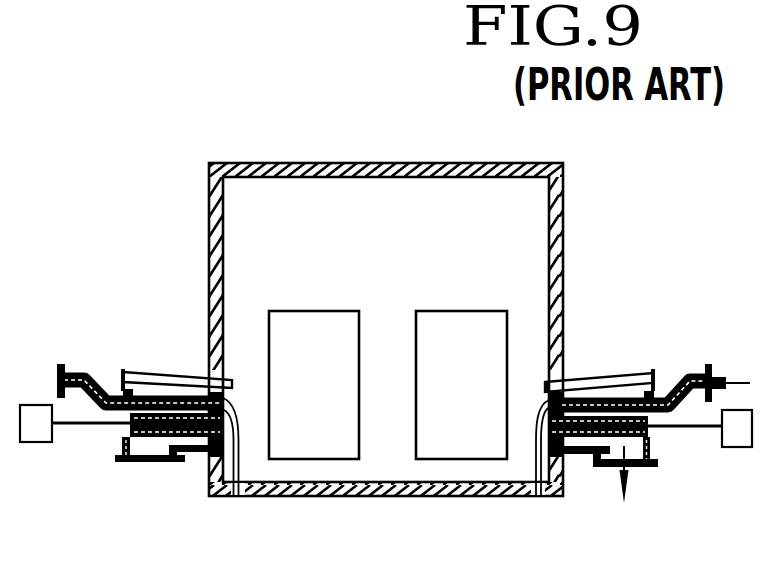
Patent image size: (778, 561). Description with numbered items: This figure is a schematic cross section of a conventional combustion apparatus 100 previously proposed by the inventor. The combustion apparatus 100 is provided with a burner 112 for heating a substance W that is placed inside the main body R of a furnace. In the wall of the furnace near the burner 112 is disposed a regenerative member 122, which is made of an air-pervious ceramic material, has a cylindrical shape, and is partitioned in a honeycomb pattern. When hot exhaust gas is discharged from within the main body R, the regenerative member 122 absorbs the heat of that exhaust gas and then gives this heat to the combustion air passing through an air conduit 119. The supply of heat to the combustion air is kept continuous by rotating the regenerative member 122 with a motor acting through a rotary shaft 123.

The main body of the furnace R is at (391, 163).
The substance subjected to heating W is at (294, 399).
The combustion apparatus 100 is at (137, 311).
The burner 112 is at (160, 373).
The air conduit 119 is at (695, 372).
The regenerative member 122 is at (238, 497).
The rotary shaft 123 is at (76, 433).